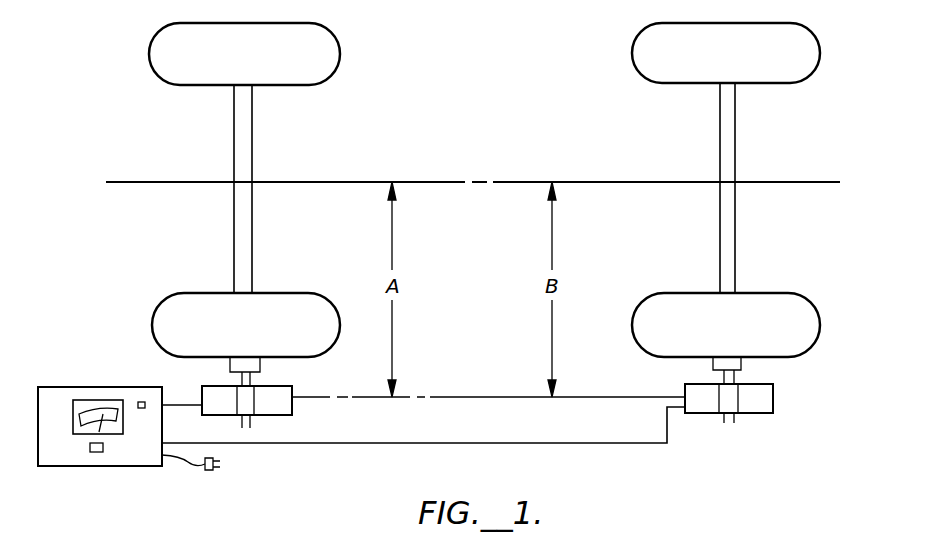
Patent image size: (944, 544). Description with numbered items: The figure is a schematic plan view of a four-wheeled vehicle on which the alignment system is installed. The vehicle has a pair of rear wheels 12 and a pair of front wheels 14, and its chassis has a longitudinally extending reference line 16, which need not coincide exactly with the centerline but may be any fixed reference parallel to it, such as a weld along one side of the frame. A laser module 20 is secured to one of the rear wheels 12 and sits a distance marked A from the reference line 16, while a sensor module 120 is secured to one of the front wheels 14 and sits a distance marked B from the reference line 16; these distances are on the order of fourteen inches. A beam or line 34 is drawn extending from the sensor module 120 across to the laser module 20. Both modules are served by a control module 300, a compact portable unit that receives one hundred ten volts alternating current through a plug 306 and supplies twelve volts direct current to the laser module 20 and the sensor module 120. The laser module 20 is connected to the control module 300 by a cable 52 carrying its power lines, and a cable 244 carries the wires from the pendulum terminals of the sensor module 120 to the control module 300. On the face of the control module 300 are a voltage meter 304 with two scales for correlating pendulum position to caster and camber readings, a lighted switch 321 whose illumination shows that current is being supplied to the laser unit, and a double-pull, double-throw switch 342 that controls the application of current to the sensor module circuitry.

The rear wheels 12 is at (800, 75).
The front wheels 14 is at (310, 73).
The reference line 16 is at (482, 181).
The laser module 20 is at (753, 420).
The projected reference line 34 is at (463, 397).
The cable 52 is at (435, 443).
The sensor module 120 is at (275, 420).
The cable 244 is at (196, 378).
The control module 300 is at (68, 386).
The voltage meter 304 is at (109, 400).
The plug 306 is at (214, 472).
The lighted switch 321 is at (141, 401).
The double-pull, double-throw switch 342 is at (97, 452).